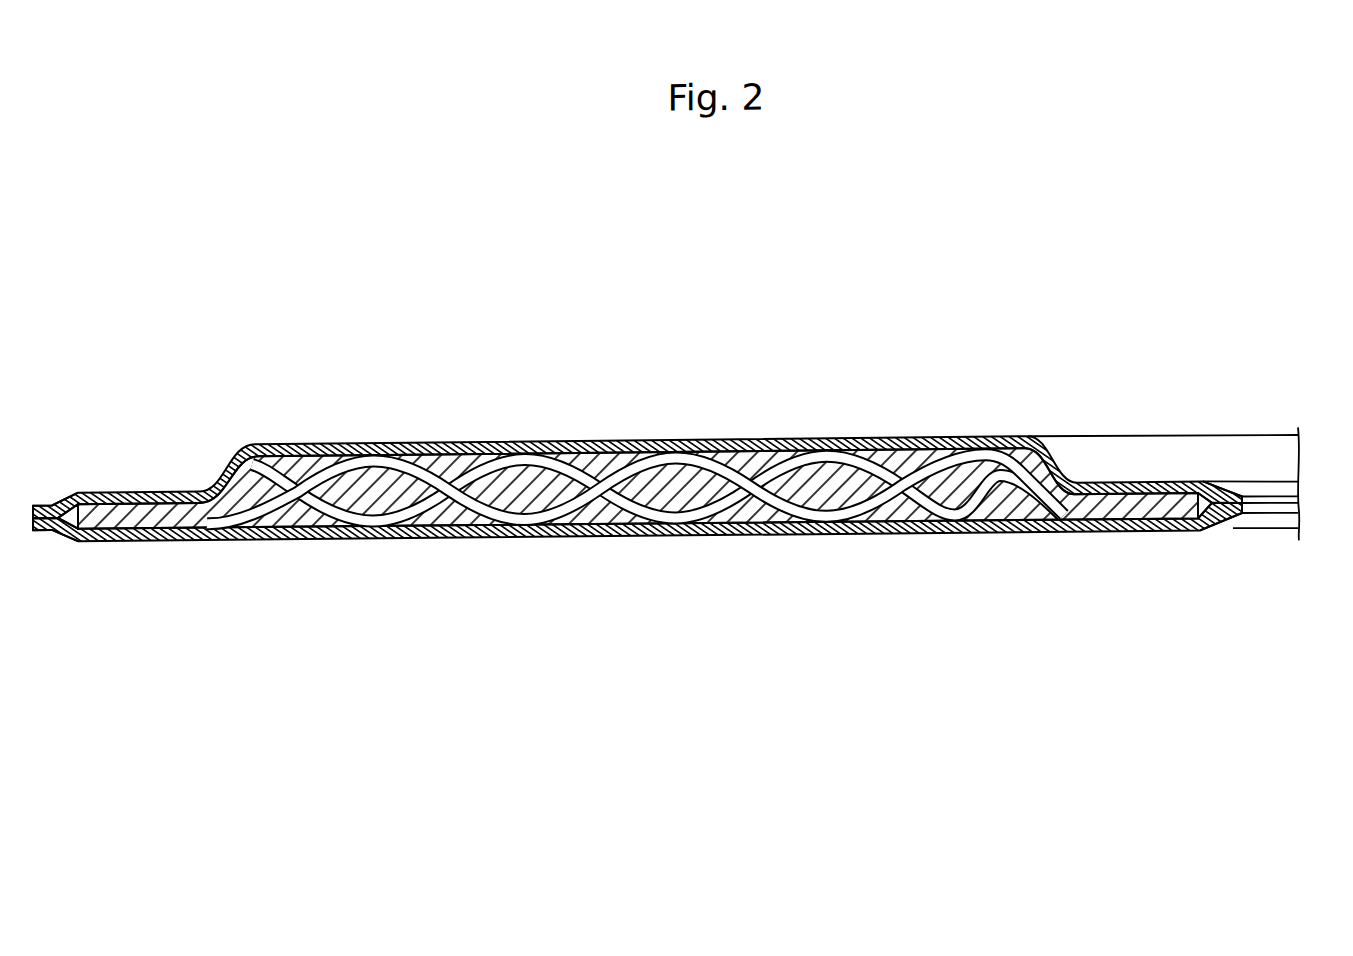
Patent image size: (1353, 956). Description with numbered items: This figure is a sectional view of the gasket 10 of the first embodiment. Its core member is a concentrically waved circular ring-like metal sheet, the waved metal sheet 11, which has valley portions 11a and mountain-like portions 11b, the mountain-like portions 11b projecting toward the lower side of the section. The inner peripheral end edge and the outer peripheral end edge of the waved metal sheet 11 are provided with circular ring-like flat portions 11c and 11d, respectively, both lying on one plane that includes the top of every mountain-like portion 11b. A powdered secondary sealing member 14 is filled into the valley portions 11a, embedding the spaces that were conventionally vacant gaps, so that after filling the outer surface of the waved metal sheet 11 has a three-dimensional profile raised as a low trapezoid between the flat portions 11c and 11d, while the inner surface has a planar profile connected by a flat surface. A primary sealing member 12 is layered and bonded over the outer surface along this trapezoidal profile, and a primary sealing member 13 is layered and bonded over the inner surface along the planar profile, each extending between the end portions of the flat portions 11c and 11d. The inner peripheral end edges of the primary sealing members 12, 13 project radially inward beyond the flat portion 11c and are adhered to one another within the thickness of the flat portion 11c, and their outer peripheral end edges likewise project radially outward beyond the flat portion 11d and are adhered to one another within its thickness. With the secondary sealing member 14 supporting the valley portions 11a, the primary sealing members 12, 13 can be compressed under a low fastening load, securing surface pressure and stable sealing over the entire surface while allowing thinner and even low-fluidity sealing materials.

The gasket 10 is at (912, 418).
The waved metal sheet 11 is at (627, 497).
The valley portions 11a is at (483, 502).
The mountain-like portions 11b is at (559, 493).
The flat portion on the inner peripheral side 11c is at (1138, 512).
The flat portion on the outer peripheral side 11d is at (132, 513).
The primary sealing member on the outer surface side 12 is at (328, 447).
The primary sealing member on the inner surface side 13 is at (404, 541).
The secondary sealing member 14 is at (776, 475).